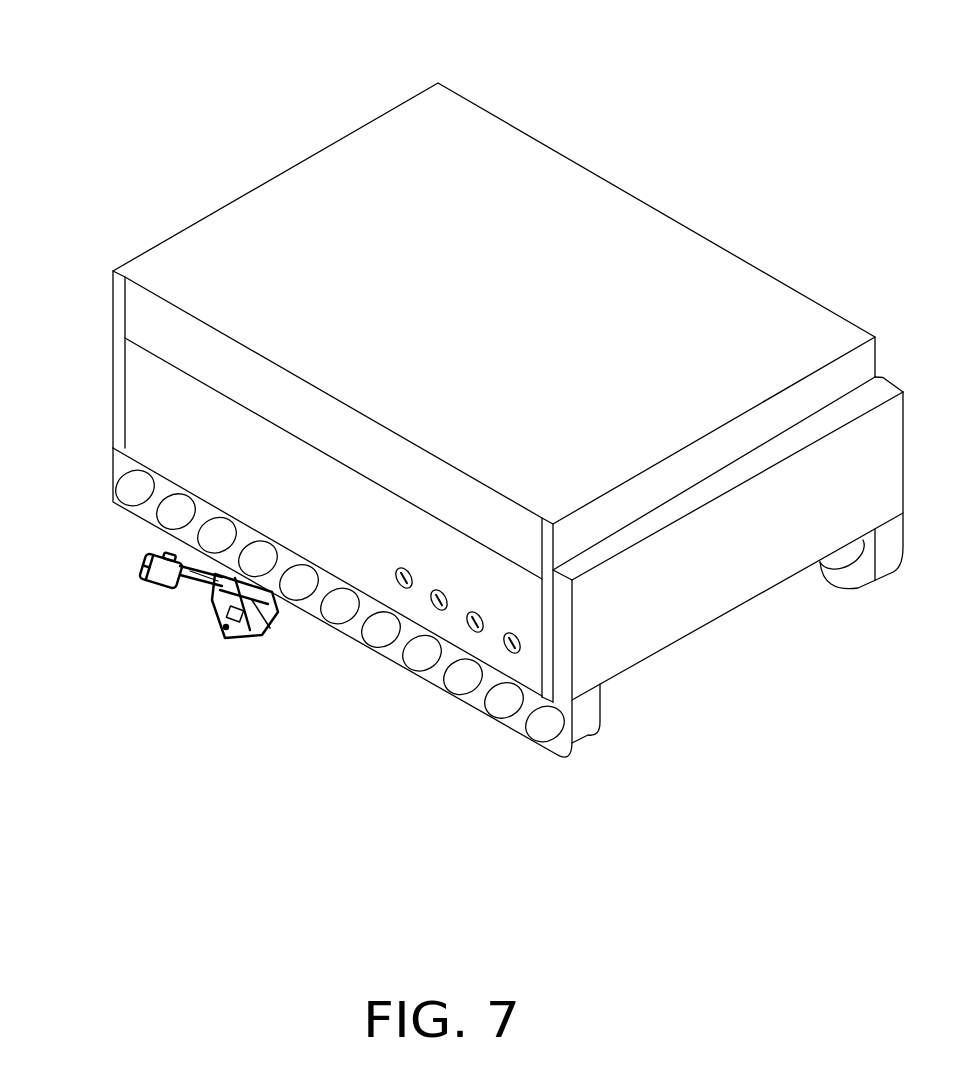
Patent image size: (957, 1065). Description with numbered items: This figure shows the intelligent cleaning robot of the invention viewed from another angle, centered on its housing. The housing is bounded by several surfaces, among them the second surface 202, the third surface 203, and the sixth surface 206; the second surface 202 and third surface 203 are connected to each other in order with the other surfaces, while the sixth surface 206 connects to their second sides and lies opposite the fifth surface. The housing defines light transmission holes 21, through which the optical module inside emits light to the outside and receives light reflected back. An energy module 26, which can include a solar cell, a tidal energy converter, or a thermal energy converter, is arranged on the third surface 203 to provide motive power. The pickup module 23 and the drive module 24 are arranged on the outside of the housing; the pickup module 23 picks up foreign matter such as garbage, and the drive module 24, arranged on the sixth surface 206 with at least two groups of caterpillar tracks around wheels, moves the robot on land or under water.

The third surface 203 is at (407, 148).
The energy module 26 is at (175, 270).
The second surface 202 is at (143, 417).
The light transmission holes 21 is at (507, 648).
The sixth surface 206 is at (625, 632).
The drive module 24 is at (682, 540).
The pickup module 23 is at (148, 578).